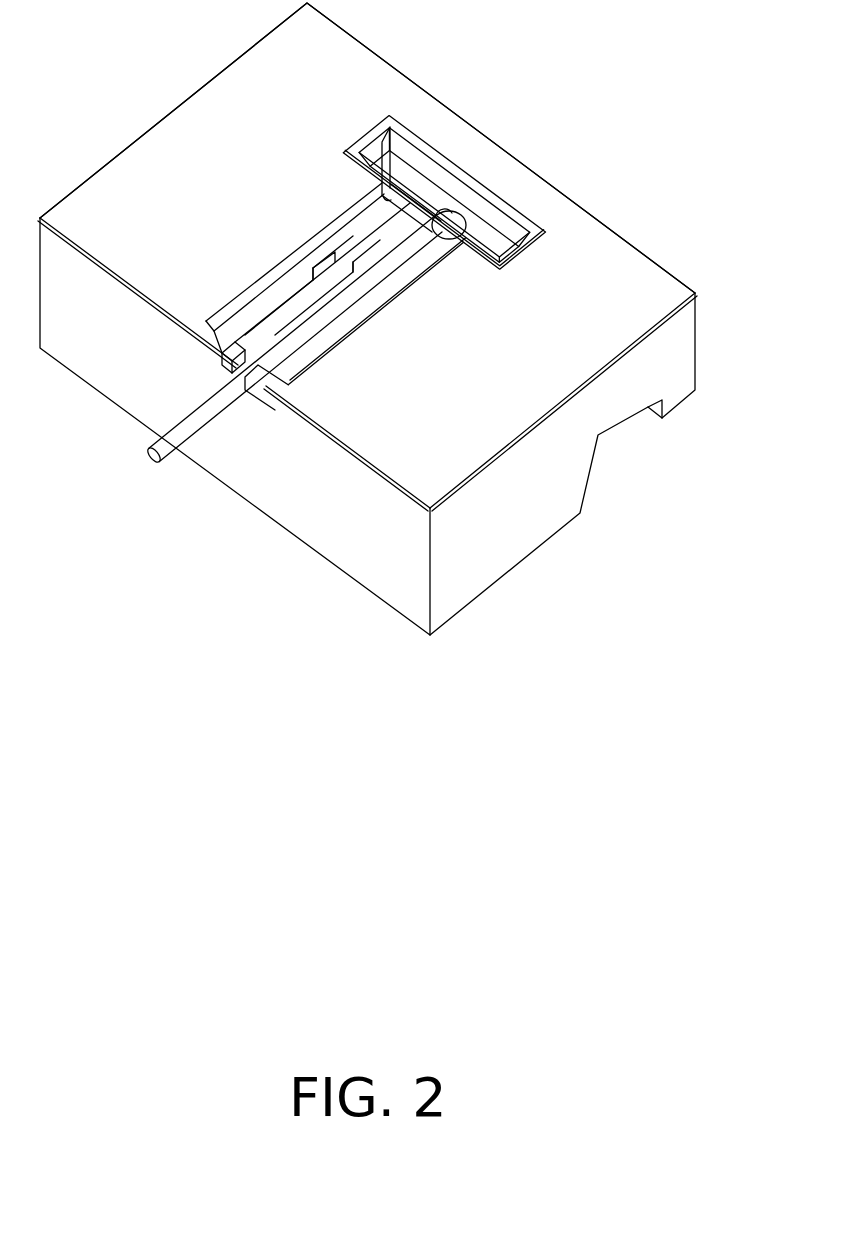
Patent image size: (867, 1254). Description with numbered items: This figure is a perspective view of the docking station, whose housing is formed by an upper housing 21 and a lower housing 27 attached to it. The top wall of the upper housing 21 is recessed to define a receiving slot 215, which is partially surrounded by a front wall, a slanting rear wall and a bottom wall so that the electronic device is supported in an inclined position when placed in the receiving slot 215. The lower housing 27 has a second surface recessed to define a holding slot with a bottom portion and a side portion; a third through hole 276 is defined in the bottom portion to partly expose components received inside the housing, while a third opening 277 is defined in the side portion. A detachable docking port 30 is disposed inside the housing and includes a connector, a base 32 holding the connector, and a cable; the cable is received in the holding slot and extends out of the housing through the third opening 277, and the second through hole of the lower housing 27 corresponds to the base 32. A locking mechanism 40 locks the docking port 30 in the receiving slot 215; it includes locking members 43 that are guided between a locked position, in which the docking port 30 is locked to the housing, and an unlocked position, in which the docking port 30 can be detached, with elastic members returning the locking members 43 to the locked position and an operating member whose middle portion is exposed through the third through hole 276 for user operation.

The upper housing 21 is at (517, 532).
The lower housing 27 is at (622, 268).
The receiving slot 215 is at (625, 437).
The third through hole 276 is at (370, 293).
The third opening 277 is at (235, 362).
The locking mechanism 40 is at (380, 225).
The locking member 43 is at (382, 168).
The docking port 30 is at (198, 420).
The base 32 is at (412, 203).